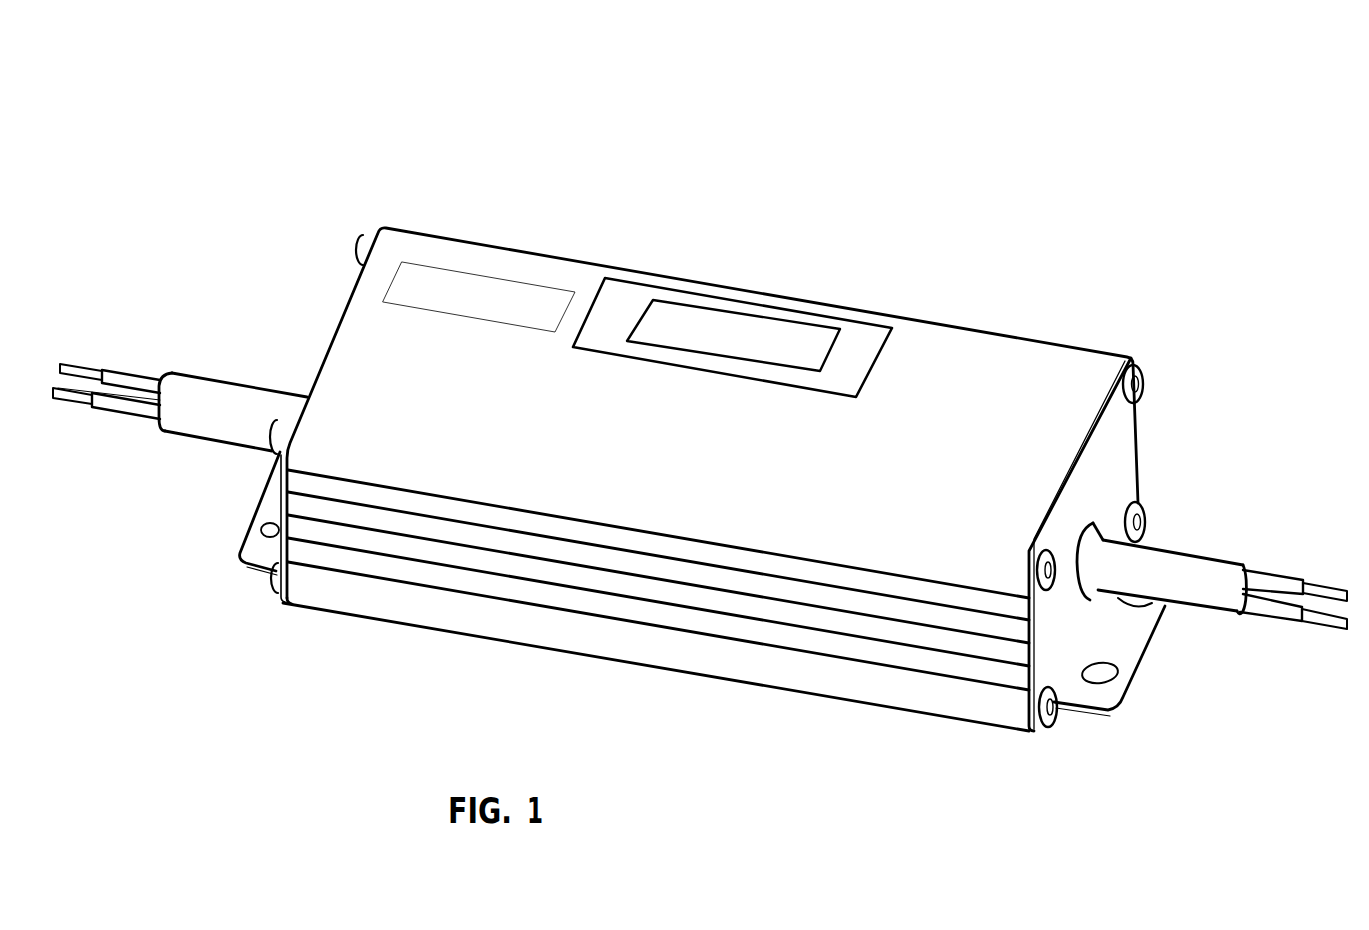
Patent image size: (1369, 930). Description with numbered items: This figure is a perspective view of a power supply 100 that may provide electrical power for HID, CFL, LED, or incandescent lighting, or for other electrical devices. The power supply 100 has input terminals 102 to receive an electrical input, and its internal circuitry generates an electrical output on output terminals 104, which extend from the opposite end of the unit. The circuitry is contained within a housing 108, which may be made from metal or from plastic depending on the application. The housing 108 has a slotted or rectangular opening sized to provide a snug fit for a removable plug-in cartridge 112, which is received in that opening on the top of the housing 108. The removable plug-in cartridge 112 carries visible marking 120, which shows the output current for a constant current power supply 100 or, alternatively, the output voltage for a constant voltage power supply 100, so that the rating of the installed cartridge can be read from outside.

The power supply 100 is at (759, 373).
The input terminals 102 is at (158, 337).
The output terminals 104 is at (1242, 541).
The housing 108 is at (573, 263).
The removable plug-in cartridge 112 is at (698, 320).
The visible marking 120 is at (745, 300).